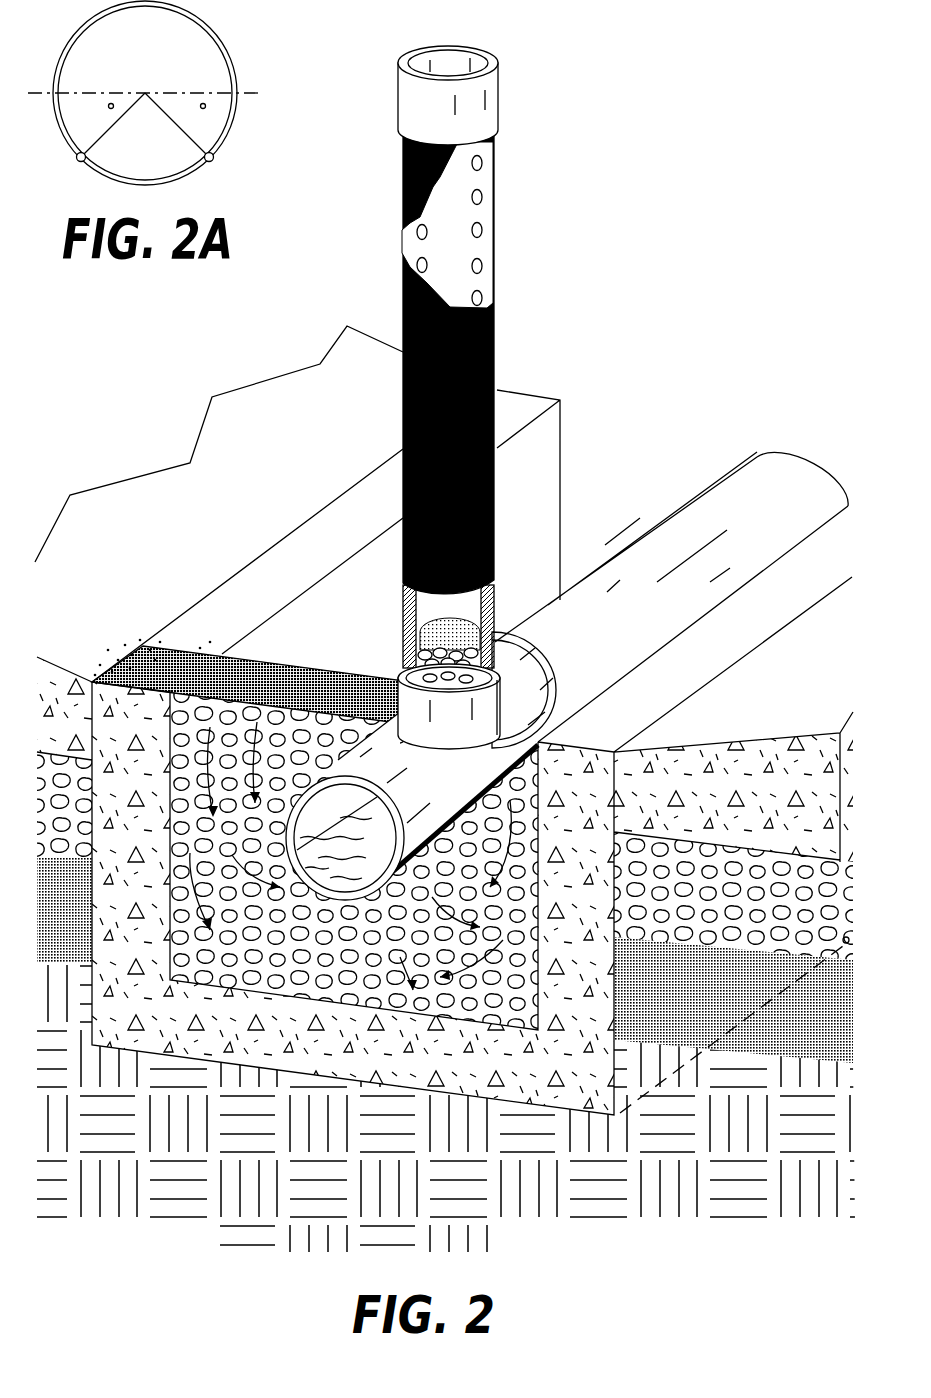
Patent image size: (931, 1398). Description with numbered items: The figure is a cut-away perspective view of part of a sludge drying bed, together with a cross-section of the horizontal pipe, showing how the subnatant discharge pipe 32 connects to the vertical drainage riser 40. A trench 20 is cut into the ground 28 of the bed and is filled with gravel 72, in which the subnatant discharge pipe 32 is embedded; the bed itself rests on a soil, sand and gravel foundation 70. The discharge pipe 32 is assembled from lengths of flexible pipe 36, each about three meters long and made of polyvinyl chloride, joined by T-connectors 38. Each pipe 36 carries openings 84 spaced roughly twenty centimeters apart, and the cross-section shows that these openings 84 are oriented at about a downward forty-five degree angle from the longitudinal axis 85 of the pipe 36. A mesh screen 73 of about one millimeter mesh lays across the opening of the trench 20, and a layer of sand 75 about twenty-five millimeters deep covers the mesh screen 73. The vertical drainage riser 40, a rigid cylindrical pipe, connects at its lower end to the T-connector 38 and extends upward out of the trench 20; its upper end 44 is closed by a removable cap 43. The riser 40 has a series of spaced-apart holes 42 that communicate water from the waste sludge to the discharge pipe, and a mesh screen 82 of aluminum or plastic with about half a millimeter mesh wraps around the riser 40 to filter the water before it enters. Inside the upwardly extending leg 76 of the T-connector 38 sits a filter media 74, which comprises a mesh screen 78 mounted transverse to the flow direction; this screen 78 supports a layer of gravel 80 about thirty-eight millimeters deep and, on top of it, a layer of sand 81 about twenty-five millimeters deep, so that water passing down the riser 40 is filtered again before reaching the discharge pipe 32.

In FIG. 2, the trench 20 is at (656, 424).
In FIG. 2, the ground 28 is at (276, 449).
In FIG. 2, the subnatant discharge pipe 32 is at (846, 503).
In FIG. 2A, the flexible pipe 36 is at (231, 63).
In FIG. 2, the flexible pipe 36 is at (753, 497).
In FIG. 2, the T-connector 38 is at (466, 790).
In FIG. 2, the vertical drainage riser 40 is at (493, 282).
In FIG. 2, the holes 42 is at (487, 230).
In FIG. 2, the removable cap 43 is at (410, 92).
In FIG. 2, the upper end of riser 44 is at (533, 127).
In FIG. 2, the foundation 70 is at (808, 990).
In FIG. 2, the gravel 72 is at (170, 767).
In FIG. 2, the mesh screen 73 is at (193, 652).
In FIG. 2, the filter media 74 is at (404, 657).
In FIG. 2, the layer of sand 75 is at (107, 657).
In FIG. 2, the upwardly extending leg 76 is at (536, 685).
In FIG. 2, the mesh screen 78 is at (403, 673).
In FIG. 2, the gravel 80 is at (413, 636).
In FIG. 2, the sand 81 is at (408, 627).
In FIG. 2, the mesh screen 82 is at (497, 376).
In FIG. 2A, the openings 84 is at (78, 158).
In FIG. 2A, the longitudinal axis 85 is at (156, 92).